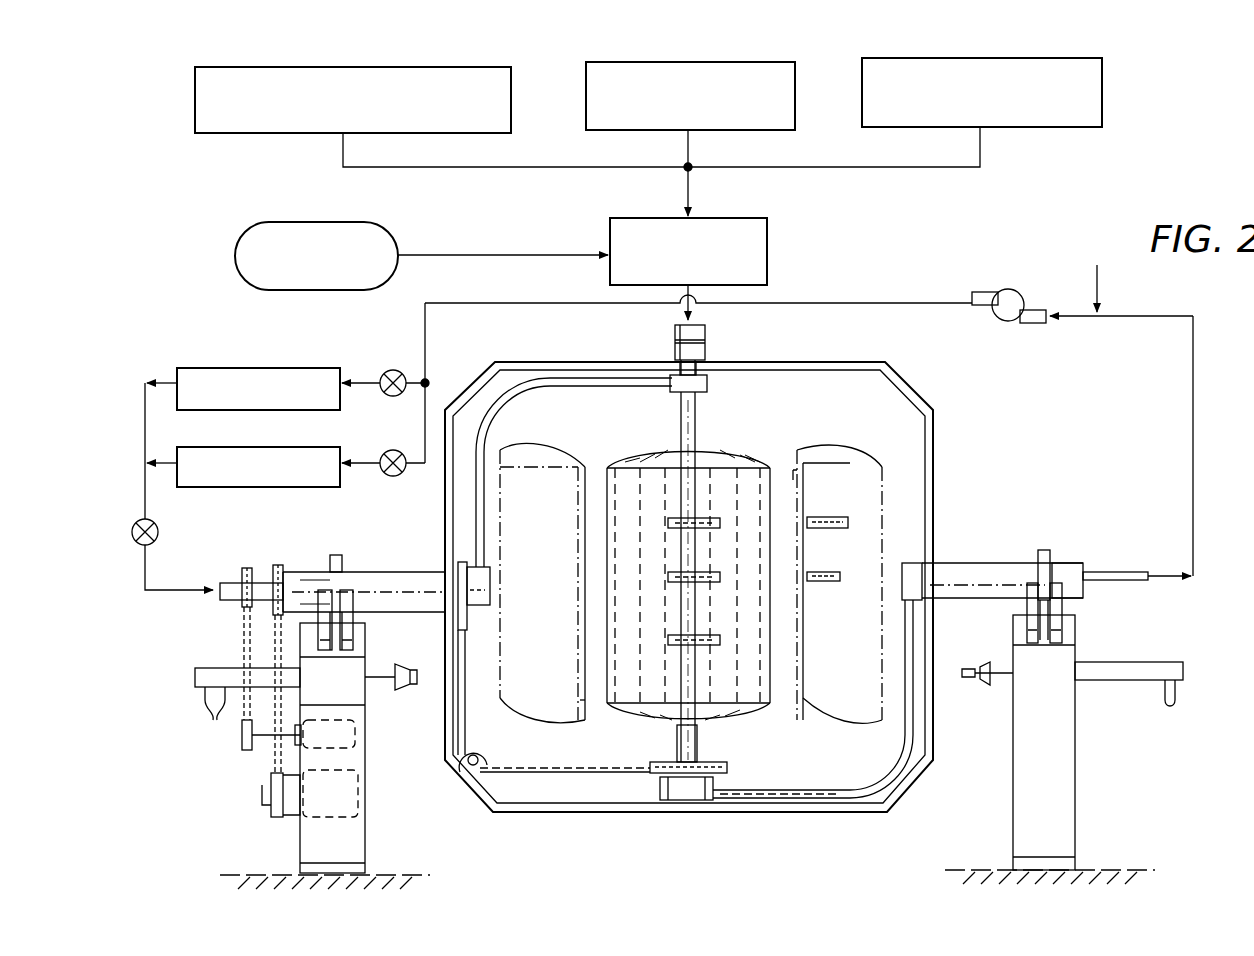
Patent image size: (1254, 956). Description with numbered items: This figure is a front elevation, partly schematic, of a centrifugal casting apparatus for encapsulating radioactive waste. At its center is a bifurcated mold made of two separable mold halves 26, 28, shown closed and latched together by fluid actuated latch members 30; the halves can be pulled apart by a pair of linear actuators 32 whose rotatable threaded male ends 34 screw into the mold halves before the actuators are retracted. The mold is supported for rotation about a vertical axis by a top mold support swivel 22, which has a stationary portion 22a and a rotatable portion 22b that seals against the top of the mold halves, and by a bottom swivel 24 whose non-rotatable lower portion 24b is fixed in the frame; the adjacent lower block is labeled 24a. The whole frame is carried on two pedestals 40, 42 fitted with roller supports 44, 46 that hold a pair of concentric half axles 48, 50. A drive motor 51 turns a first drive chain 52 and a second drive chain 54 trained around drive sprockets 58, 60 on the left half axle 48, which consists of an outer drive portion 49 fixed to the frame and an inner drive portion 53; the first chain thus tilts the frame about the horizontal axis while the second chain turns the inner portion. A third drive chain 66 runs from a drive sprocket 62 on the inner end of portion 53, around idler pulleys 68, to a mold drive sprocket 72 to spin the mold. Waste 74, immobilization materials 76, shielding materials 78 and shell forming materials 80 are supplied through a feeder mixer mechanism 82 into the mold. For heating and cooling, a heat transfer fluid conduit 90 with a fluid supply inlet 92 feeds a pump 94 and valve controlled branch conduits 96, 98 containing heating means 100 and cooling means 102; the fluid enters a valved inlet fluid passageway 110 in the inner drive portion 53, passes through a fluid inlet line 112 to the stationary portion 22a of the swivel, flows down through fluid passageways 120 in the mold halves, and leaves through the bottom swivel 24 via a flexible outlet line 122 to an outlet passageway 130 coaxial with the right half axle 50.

The top mold support swivel 22 is at (712, 400).
The stationary portion of the top swivel 22a is at (730, 370).
The rotatable portion of the top swivel 22b is at (708, 382).
The bottom swivel 24 is at (733, 778).
The lower bearing block 24a is at (660, 787).
The non-rotatable portion of the bottom swivel 24b is at (668, 803).
The mold half 26 is at (641, 448).
The mold half 28 is at (832, 450).
The fluid actuated latch members 30 is at (668, 520).
The linear actuators 32 is at (1143, 662).
The threaded male ends 34 is at (1000, 678).
The pedestal 40 is at (352, 852).
The pedestal 42 is at (1060, 814).
The roller support 44 is at (360, 637).
The roller support 46 is at (1045, 642).
The left hand half axle 48 is at (333, 567).
The outer drive portion 49 is at (428, 612).
The right hand half axle 50 is at (998, 560).
The drive motor 51 is at (342, 826).
The first drive chain 52 is at (244, 655).
The inner drive portion 53 is at (228, 601).
The second drive chain 54 is at (275, 757).
The drive sprocket 58 is at (247, 568).
The drive sprocket 60 is at (275, 565).
The drive sprocket 62 is at (668, 762).
The third drive chain 66 is at (468, 664).
The idler pulleys 68 is at (485, 752).
The mold drive sprocket 72 is at (710, 762).
The waste source 74 is at (275, 222).
The immobilization materials source 76 is at (240, 135).
The shielding materials source 78 is at (586, 100).
The shell forming materials source 80 is at (1102, 100).
The feeder mixer mechanism 82 is at (767, 248).
The heat transfer fluid conduit 90 is at (152, 519).
The fluid supply inlet 92 is at (1100, 282).
The pump 94 is at (1008, 290).
The valve controlled branch conduit 96 is at (391, 370).
The valve controlled branch conduit 98 is at (391, 450).
The heating means 100 is at (262, 368).
The cooling means 102 is at (272, 447).
The valved inlet fluid passageway 110 is at (168, 590).
The fluid inlet line 112 is at (608, 372).
The fluid passageways 120 is at (740, 630).
The flexible heat transfer fluid outlet line 122 is at (852, 805).
The outlet passageway 130 is at (1120, 572).